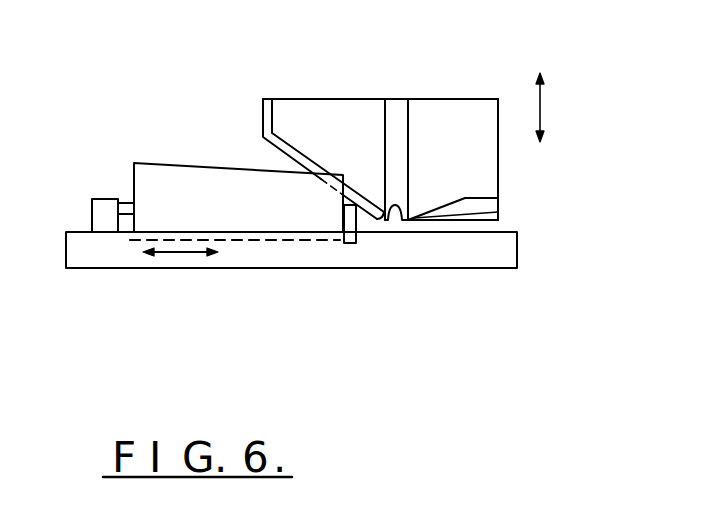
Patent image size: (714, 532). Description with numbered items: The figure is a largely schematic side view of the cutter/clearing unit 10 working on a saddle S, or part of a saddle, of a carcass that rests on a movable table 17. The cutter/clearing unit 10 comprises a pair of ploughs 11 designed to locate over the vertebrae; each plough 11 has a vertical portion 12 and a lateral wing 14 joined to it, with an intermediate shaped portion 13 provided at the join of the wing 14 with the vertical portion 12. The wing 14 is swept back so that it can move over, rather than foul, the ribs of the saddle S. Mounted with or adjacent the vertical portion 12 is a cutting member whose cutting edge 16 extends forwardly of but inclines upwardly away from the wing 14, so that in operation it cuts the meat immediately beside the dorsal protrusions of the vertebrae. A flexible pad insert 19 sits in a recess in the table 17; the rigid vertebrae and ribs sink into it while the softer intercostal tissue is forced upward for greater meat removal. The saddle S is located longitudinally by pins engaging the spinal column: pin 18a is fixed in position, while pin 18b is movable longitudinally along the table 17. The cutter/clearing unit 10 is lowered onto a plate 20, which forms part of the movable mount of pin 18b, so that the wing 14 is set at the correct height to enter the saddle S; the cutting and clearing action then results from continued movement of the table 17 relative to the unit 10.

The saddle S is at (182, 178).
The cutter/clearing unit 10 is at (424, 94).
The plough 11 is at (480, 100).
The vertical portion 12 is at (564, 118).
The intermediate shaped portion 13 is at (393, 212).
The lateral wing 14 is at (487, 203).
The cutting edge 16 is at (287, 153).
The movable table 17 is at (495, 255).
The fixed pin 18a is at (122, 222).
The movable pin 18b is at (350, 208).
The flexible pad insert 19 is at (246, 243).
The plate 20 is at (363, 210).